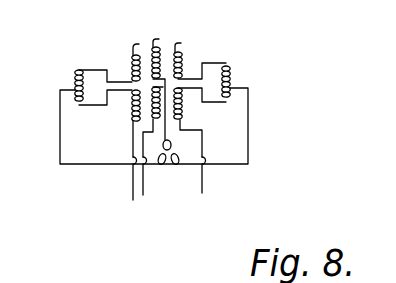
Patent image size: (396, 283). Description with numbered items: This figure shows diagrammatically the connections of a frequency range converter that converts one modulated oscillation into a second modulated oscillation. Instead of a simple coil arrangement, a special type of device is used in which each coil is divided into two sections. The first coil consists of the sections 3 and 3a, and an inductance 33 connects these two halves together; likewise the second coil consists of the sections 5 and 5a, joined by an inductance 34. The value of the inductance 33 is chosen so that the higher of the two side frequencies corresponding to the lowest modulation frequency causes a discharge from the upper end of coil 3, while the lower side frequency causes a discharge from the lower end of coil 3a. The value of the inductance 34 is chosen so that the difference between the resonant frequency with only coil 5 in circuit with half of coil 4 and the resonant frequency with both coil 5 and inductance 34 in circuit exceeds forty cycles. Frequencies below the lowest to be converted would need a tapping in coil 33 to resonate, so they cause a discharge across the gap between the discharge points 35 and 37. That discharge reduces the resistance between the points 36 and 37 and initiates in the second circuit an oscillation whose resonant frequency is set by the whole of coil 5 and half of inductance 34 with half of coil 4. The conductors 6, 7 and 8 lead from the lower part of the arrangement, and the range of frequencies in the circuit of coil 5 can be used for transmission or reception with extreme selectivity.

The coil section 3 is at (130, 109).
The coil section 3a is at (130, 57).
The coil 4 is at (158, 52).
The coil section 5 is at (185, 112).
The coil section 5a is at (188, 65).
The conductor 6 is at (131, 184).
The conductor 7 is at (142, 190).
The conductor 8 is at (203, 191).
The inductance 33 is at (75, 77).
The inductance 34 is at (231, 80).
The discharge point 35 is at (160, 165).
The discharge point 36 is at (178, 165).
The discharge point 37 is at (171, 143).